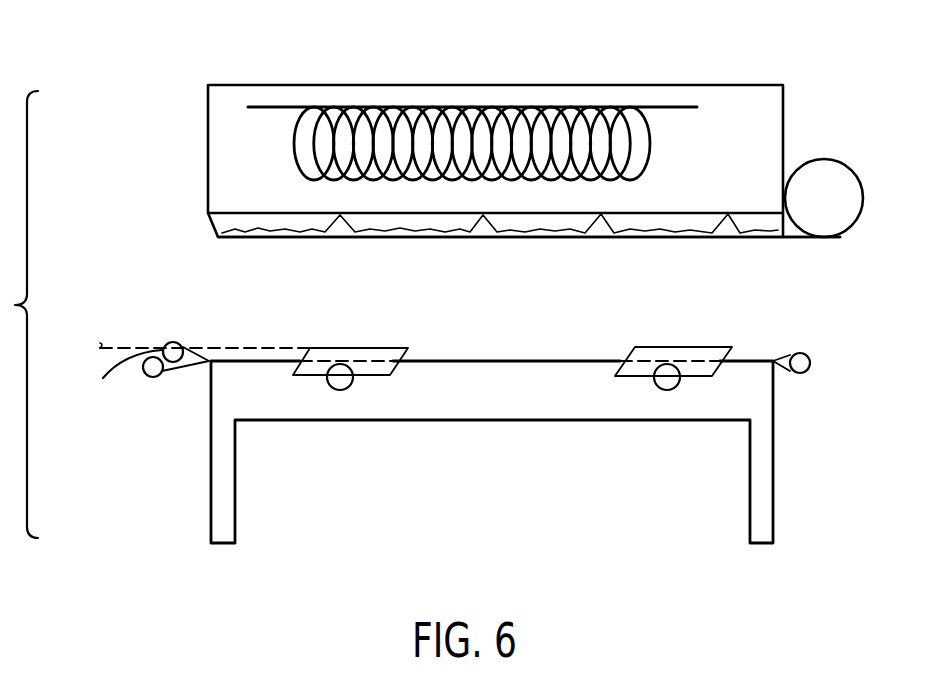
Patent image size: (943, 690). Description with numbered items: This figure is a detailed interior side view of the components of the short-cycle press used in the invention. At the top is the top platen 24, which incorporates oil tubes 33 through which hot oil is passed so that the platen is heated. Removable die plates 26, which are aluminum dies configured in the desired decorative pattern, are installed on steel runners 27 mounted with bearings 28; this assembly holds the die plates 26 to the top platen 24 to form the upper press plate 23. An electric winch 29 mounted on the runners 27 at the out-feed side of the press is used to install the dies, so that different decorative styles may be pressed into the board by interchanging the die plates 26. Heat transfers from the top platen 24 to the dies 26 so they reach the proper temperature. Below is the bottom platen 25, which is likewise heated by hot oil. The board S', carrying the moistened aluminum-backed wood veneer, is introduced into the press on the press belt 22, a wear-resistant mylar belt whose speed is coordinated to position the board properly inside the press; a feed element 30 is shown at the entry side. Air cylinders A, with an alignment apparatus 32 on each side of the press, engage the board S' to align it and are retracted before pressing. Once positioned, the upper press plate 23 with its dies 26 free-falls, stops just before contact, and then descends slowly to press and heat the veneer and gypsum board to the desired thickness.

The upper press plate 23 is at (474, 153).
The top platen 24 is at (192, 160).
The oil tubes 33 is at (518, 107).
The steel runners 27 is at (635, 196).
The die plates 26 is at (547, 235).
The bearings 28 is at (763, 238).
The electric winch 29 is at (836, 213).
The bottom platen 25 is at (511, 404).
The alignment apparatus 32 is at (360, 347).
The press belt 22 is at (183, 377).
The sheet feed guide 30 is at (109, 378).
The air cylinders A is at (340, 390).
The board S' is at (203, 315).